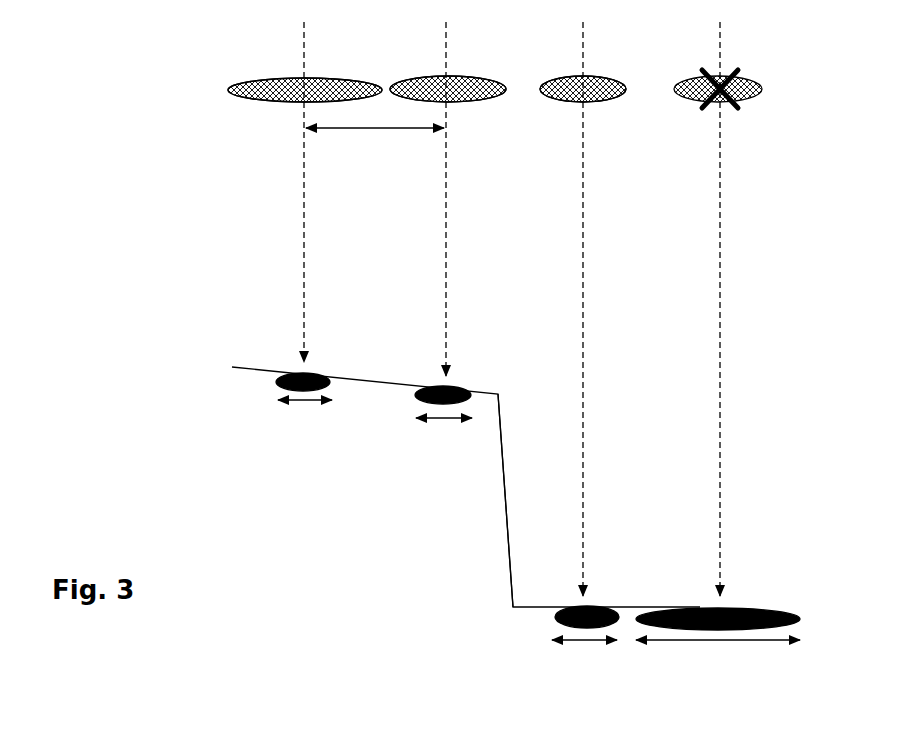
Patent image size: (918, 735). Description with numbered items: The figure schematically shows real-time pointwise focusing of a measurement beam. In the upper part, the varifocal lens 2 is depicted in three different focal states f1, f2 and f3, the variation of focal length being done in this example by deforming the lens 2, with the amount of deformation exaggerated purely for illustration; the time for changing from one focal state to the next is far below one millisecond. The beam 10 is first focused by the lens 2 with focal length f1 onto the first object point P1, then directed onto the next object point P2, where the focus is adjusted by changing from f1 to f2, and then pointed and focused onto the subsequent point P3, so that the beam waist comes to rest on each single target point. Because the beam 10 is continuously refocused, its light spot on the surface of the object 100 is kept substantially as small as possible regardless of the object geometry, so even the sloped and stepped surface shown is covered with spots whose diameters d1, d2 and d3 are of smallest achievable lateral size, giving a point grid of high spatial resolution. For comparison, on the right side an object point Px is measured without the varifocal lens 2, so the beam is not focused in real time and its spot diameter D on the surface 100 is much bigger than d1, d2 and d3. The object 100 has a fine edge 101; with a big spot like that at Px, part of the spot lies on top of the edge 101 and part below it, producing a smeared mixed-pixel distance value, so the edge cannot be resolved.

The varifocal lens 2 is at (192, 88).
The beam 10 is at (292, 193).
The first focal state f1 is at (308, 82).
The second focal state f2 is at (458, 83).
The third focal state f3 is at (587, 83).
The object 100 is at (466, 487).
The edge 101 is at (506, 388).
The first object point P1 is at (297, 373).
The second object point P2 is at (430, 390).
The third object point P3 is at (555, 617).
The object point measured without varifocal lens Px is at (705, 612).
The spot diameter at P1 d1 is at (305, 418).
The spot diameter at P2 d2 is at (444, 438).
The spot diameter at P3 d3 is at (584, 659).
The spot diameter at Px D is at (718, 657).